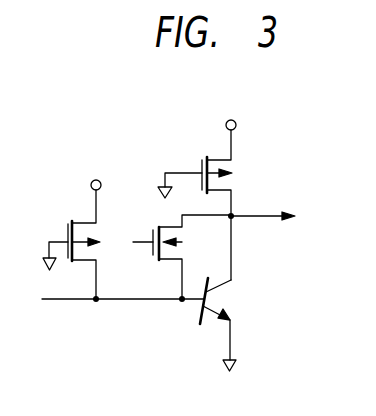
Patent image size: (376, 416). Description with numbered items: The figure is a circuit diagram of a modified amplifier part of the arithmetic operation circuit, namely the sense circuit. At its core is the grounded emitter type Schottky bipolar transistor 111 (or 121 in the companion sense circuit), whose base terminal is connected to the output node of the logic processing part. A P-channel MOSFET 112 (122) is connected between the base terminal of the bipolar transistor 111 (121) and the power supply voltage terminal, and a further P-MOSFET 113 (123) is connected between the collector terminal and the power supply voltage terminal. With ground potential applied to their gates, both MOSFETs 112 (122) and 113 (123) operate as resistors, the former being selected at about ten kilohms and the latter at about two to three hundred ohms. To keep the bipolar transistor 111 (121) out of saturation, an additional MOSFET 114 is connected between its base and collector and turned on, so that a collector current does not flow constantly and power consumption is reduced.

The grounded emitter type Schottky bipolar transistor 111 is at (263, 293).
The grounded emitter type Schottky bipolar transistor 121 is at (263, 293).
The P-channel MOSFET 112 is at (99, 227).
The P-channel MOSFET 122 is at (99, 227).
The P-MOSFET 113 is at (247, 157).
The P-MOSFET 123 is at (247, 157).
The MOSFET 114 is at (182, 257).